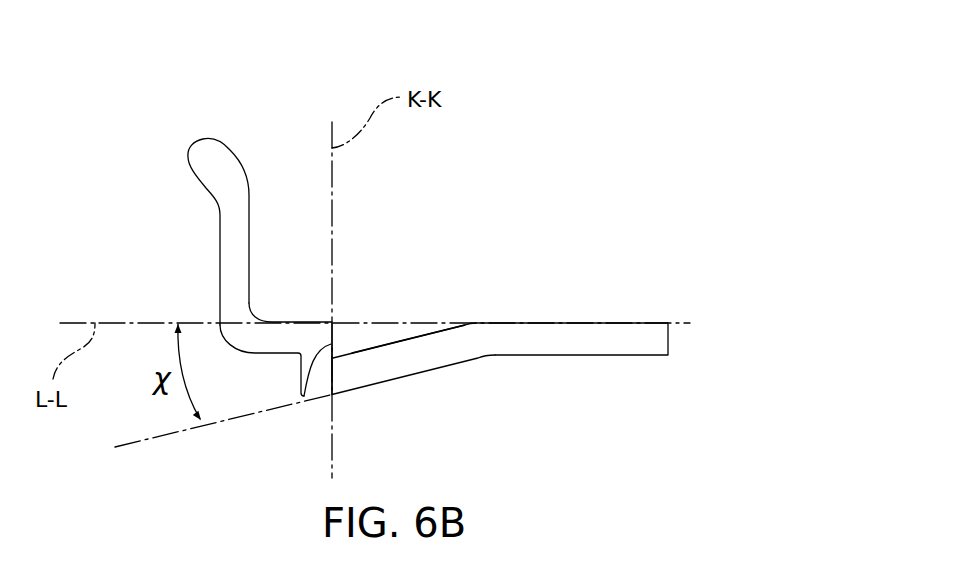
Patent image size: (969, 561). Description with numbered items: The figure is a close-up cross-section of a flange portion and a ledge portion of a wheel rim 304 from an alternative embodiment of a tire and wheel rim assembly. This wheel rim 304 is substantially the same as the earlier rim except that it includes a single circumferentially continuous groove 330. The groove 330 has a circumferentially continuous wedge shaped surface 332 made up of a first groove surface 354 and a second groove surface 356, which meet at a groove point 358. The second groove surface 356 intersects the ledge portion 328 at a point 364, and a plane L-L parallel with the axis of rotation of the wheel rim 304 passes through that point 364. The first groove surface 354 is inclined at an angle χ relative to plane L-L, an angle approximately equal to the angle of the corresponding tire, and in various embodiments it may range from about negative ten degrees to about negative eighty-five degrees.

The wheel rim 304 is at (191, 127).
The ledge portion 328 is at (514, 314).
The groove 330 is at (385, 337).
The wedge shaped surface 332 is at (420, 335).
The first groove surface 354 is at (411, 341).
The second groove surface 356 is at (300, 362).
The groove point 358 is at (333, 360).
The point 364 is at (331, 320).